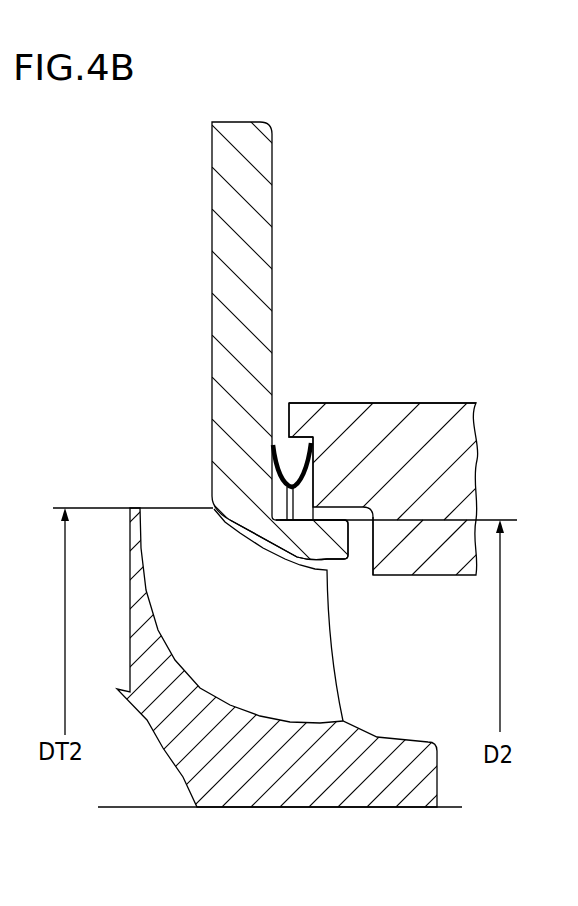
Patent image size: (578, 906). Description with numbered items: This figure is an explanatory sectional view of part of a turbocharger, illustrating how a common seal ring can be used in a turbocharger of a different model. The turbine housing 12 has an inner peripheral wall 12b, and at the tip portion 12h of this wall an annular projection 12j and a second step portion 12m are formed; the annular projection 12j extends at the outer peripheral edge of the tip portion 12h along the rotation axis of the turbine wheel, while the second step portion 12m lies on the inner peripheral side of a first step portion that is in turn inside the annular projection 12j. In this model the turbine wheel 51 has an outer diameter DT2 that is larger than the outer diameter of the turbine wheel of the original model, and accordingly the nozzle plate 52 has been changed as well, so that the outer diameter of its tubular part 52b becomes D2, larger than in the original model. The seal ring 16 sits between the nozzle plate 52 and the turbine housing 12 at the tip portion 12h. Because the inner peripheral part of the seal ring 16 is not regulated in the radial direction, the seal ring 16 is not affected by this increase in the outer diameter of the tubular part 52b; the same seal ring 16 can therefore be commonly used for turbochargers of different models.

The turbine housing 12 is at (470, 378).
The inner peripheral wall 12b is at (410, 402).
The tip portion 12h is at (327, 450).
The annular projection 12j is at (303, 413).
The second step portion 12m is at (363, 553).
The seal ring 16 is at (283, 447).
The turbine wheel 51 is at (163, 748).
The nozzle plate 52 is at (210, 228).
The tubular part 52b is at (332, 547).